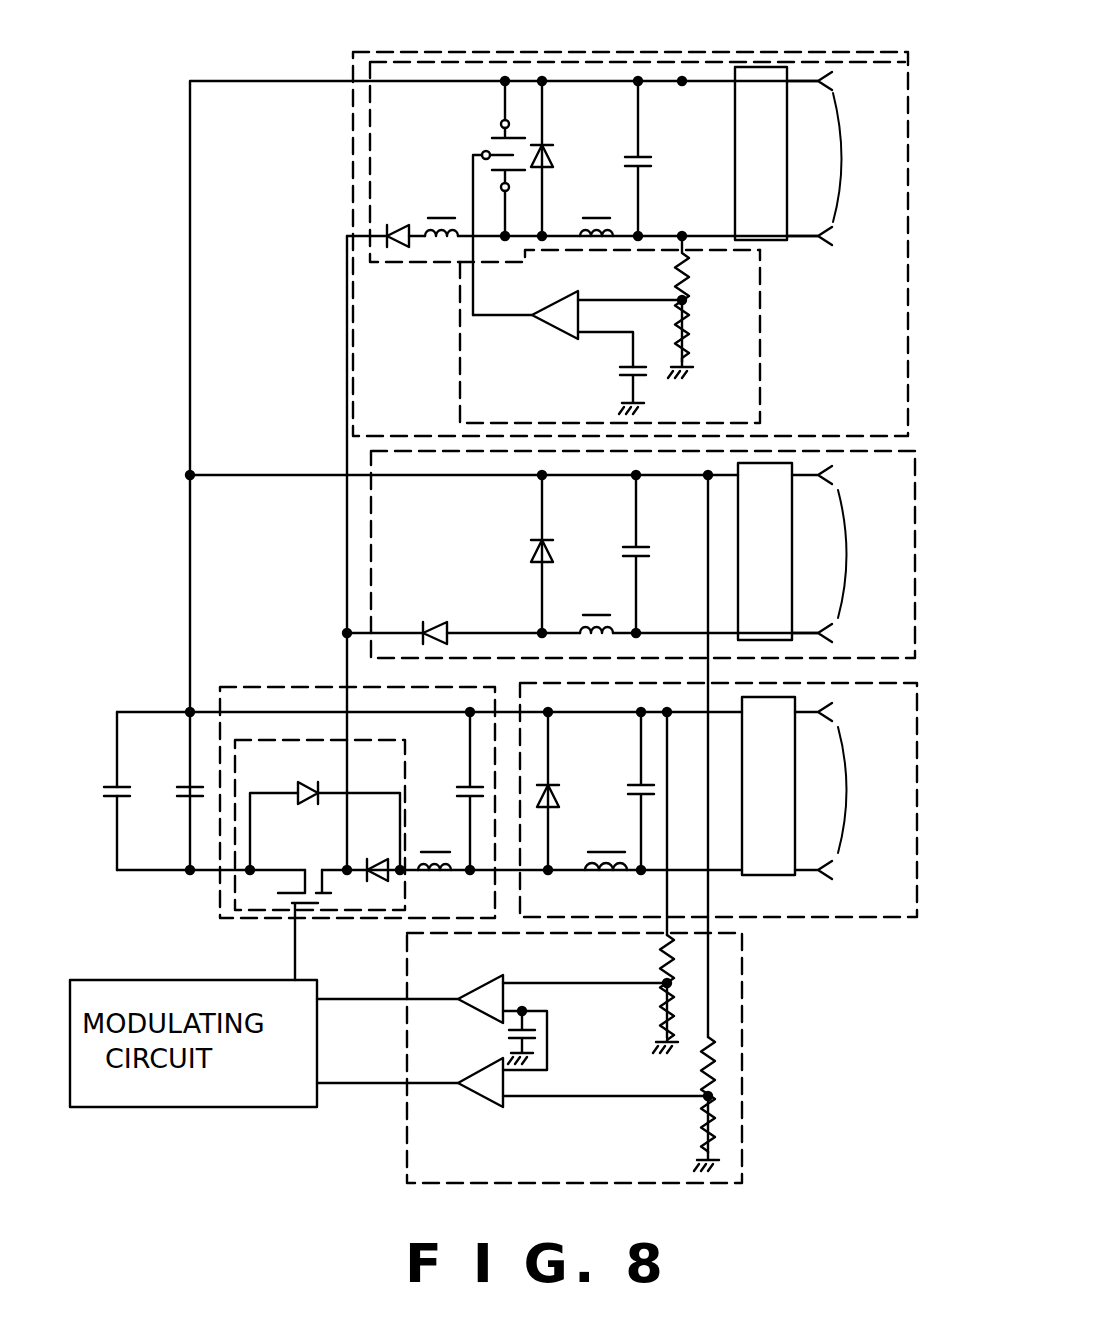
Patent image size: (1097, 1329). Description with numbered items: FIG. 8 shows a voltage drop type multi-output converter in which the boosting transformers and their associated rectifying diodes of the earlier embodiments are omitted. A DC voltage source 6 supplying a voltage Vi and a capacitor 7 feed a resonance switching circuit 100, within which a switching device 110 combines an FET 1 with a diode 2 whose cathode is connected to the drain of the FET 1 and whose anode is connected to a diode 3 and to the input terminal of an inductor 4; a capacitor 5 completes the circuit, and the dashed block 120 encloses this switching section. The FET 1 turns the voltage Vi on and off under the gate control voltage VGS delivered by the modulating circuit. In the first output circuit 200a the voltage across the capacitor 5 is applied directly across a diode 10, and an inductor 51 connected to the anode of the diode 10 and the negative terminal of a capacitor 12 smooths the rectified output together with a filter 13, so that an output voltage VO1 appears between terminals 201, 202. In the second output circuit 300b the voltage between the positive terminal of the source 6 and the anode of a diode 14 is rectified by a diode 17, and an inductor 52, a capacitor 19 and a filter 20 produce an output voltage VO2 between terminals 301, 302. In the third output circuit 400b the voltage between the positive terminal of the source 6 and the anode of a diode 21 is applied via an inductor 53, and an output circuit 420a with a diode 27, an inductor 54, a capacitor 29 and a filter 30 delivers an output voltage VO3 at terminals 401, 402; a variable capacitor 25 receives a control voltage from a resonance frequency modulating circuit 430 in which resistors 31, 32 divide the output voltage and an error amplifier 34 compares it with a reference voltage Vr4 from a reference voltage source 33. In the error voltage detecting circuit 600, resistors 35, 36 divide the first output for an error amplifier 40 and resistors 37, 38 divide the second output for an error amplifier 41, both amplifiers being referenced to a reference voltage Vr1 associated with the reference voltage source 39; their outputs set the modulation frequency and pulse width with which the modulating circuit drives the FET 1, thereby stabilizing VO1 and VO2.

The FET 1 is at (290, 863).
The diode 2 is at (378, 857).
The diode 3 is at (300, 780).
The inductor 4 is at (440, 852).
The capacitor 5 is at (460, 785).
The DC voltage source 6 is at (130, 796).
The capacitor 7 is at (180, 790).
The diode 10 is at (555, 793).
The capacitor 12 is at (628, 783).
The filter 13 is at (788, 825).
The diode 14 is at (428, 623).
The diode 17 is at (531, 557).
The capacitor 19 is at (627, 542).
The filter 20 is at (785, 590).
The diode 21 is at (402, 228).
The variable capacitor 25 is at (489, 140).
The diode 27 is at (555, 152).
The capacitor 29 is at (656, 155).
The filter 30 is at (782, 188).
The resistor 31 is at (676, 265).
The resistor 32 is at (690, 340).
The reference voltage source 33 is at (613, 375).
The error amplifier 34 is at (558, 294).
The resistor 35 is at (660, 950).
The resistor 36 is at (660, 1010).
The resistor 37 is at (720, 1067).
The resistor 38 is at (705, 1115).
The reference voltage source 39 is at (508, 1032).
The error amplifier 40 is at (488, 978).
The error amplifier 41 is at (497, 1103).
The inductor 51 is at (608, 872).
The inductor 52 is at (595, 618).
The inductor 53 is at (448, 218).
The inductor 54 is at (600, 218).
The resonance switching circuit 100 is at (220, 895).
The switching device 110 is at (283, 740).
The converter circuit 120 is at (425, 688).
The first output circuit 200a is at (780, 925).
The terminal 201 is at (833, 714).
The terminal 202 is at (838, 873).
The second output circuit 300b is at (370, 523).
The terminal 301 is at (833, 477).
The terminal 302 is at (833, 635).
The third output circuit 400b is at (353, 112).
The output terminal 401 is at (845, 78).
The output terminal 402 is at (845, 233).
The output circuit 420a is at (583, 52).
The resonance frequency modulating circuit 430 is at (460, 332).
The error voltage detecting circuit 600 is at (745, 1145).
The input voltage Vi is at (117, 740).
The gate drive voltage VGS is at (295, 950).
The reference voltage Vr1 is at (553, 1042).
The reference voltage Vr4 is at (598, 335).
The output voltage VO1 is at (846, 823).
The output voltage VO2 is at (844, 588).
The output voltage VO3 is at (842, 186).